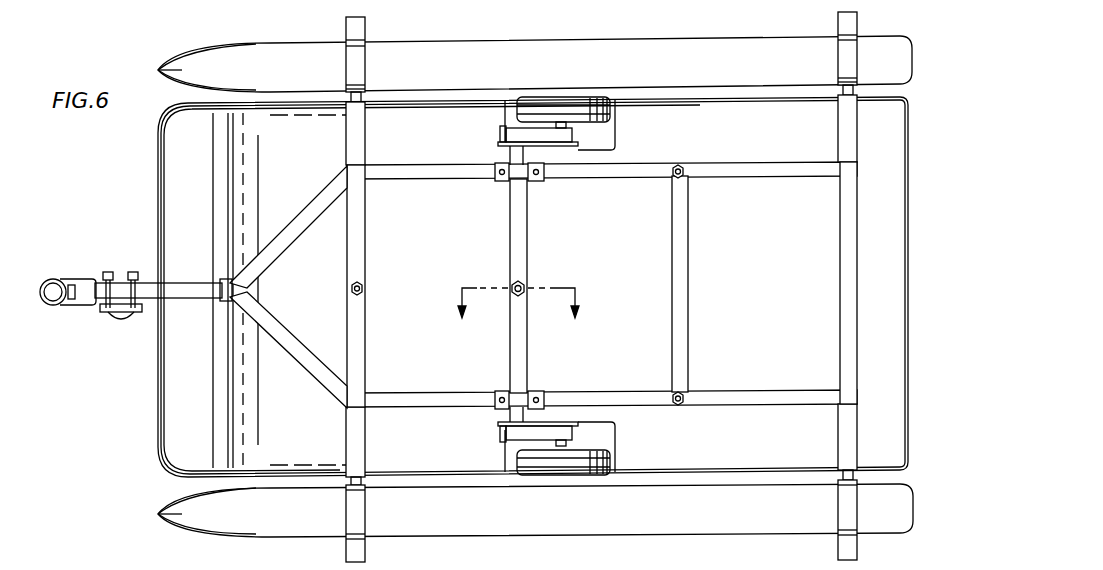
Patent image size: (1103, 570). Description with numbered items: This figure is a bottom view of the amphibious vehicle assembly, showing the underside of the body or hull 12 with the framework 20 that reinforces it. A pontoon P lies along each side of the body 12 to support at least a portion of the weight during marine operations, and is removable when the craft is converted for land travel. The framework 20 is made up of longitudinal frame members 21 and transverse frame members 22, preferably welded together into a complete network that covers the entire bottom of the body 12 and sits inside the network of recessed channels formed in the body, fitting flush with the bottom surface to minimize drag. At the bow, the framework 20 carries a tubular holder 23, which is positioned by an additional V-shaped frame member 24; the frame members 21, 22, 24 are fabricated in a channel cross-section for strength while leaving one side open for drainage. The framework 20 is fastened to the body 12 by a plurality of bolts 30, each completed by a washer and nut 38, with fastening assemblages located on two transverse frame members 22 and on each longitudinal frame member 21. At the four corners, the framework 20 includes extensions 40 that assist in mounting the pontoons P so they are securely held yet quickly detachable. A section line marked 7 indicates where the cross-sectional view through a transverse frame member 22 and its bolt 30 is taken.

The pontoon P is at (405, 48).
The body or hull 12 is at (257, 186).
The framework 20 is at (741, 443).
The longitudinal frame member 21 is at (738, 172).
The transverse frame member 22 is at (357, 232).
The tubular holder 23 is at (290, 280).
The V-shaped frame member 24 is at (320, 383).
The bolt 30 is at (520, 296).
The nut 38 is at (521, 284).
The extension 40 is at (357, 147).
The section line 7- 7 is at (518, 313).